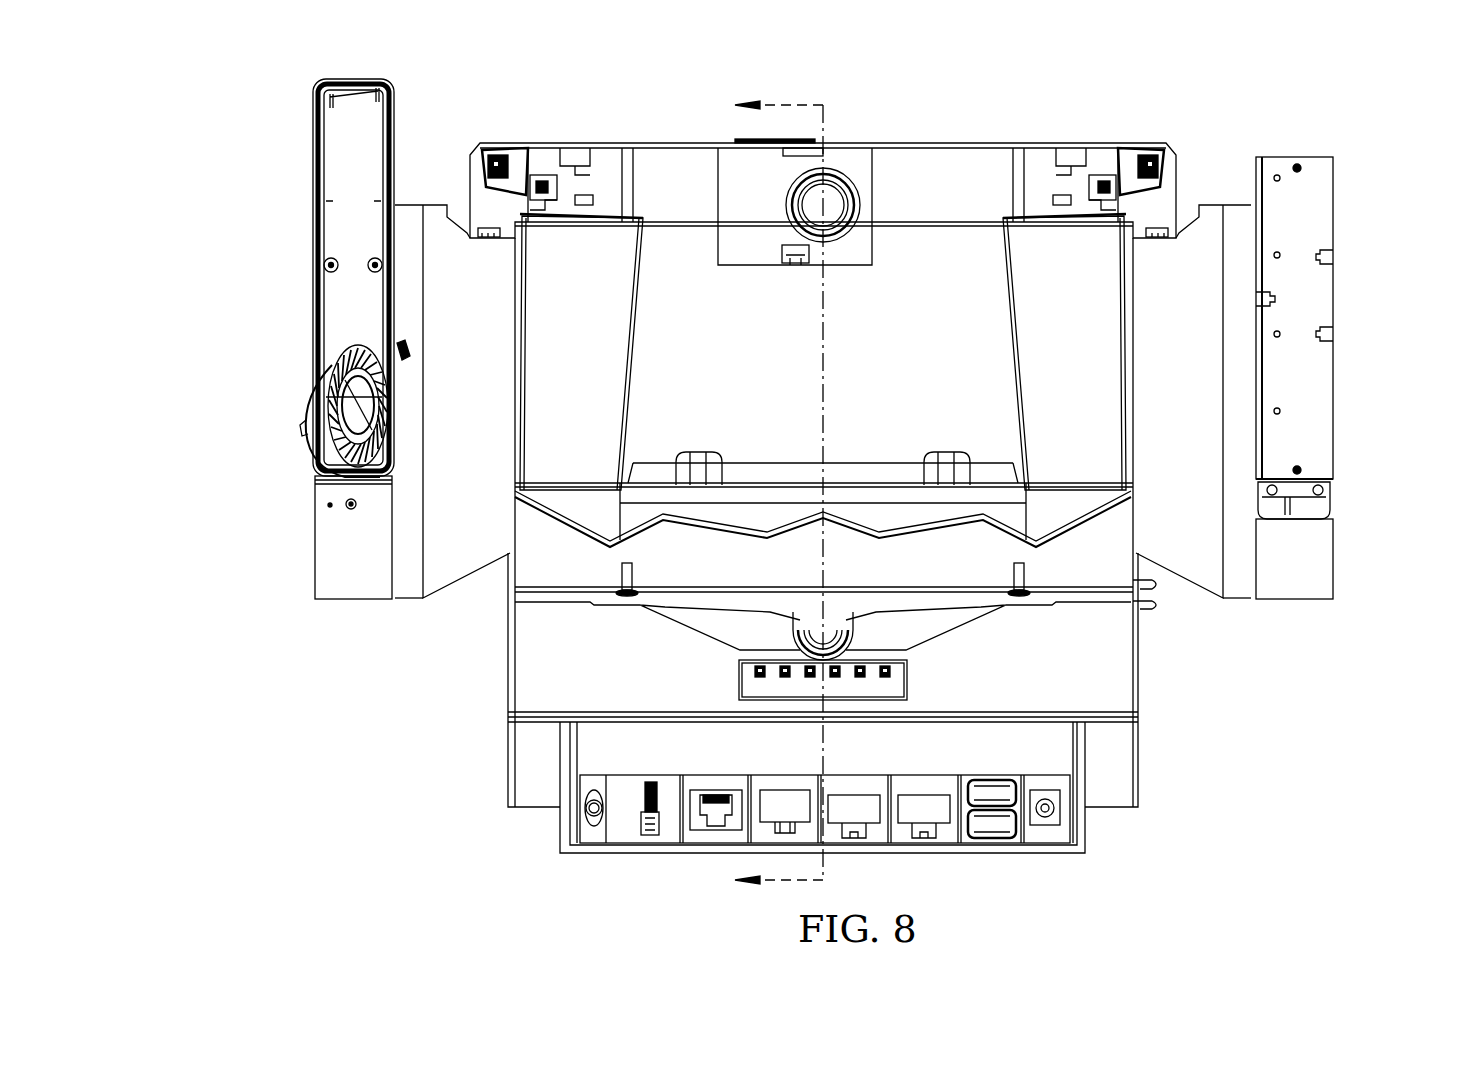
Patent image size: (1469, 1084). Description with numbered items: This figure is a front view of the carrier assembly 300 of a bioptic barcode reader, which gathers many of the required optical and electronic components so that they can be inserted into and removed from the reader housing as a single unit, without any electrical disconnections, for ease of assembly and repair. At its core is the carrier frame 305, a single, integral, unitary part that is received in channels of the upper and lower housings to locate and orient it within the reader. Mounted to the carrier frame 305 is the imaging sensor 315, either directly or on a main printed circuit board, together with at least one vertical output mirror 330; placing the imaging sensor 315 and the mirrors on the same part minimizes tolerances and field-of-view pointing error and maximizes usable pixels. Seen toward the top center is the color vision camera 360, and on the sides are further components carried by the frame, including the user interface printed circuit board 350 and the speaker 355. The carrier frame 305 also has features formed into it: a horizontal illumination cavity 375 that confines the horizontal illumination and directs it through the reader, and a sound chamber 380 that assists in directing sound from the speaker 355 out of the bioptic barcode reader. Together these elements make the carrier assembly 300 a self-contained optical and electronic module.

The carrier assembly 300 is at (238, 96).
The carrier frame 305 is at (1138, 682).
The imaging sensor 315 is at (852, 626).
The vertical output mirror 330 is at (578, 250).
The user interface printed circuit board 350 is at (1306, 206).
The speaker 355 is at (340, 378).
The color vision camera 360 is at (852, 188).
The horizontal illumination cavity 375 is at (748, 686).
The sound chamber 380 is at (352, 219).